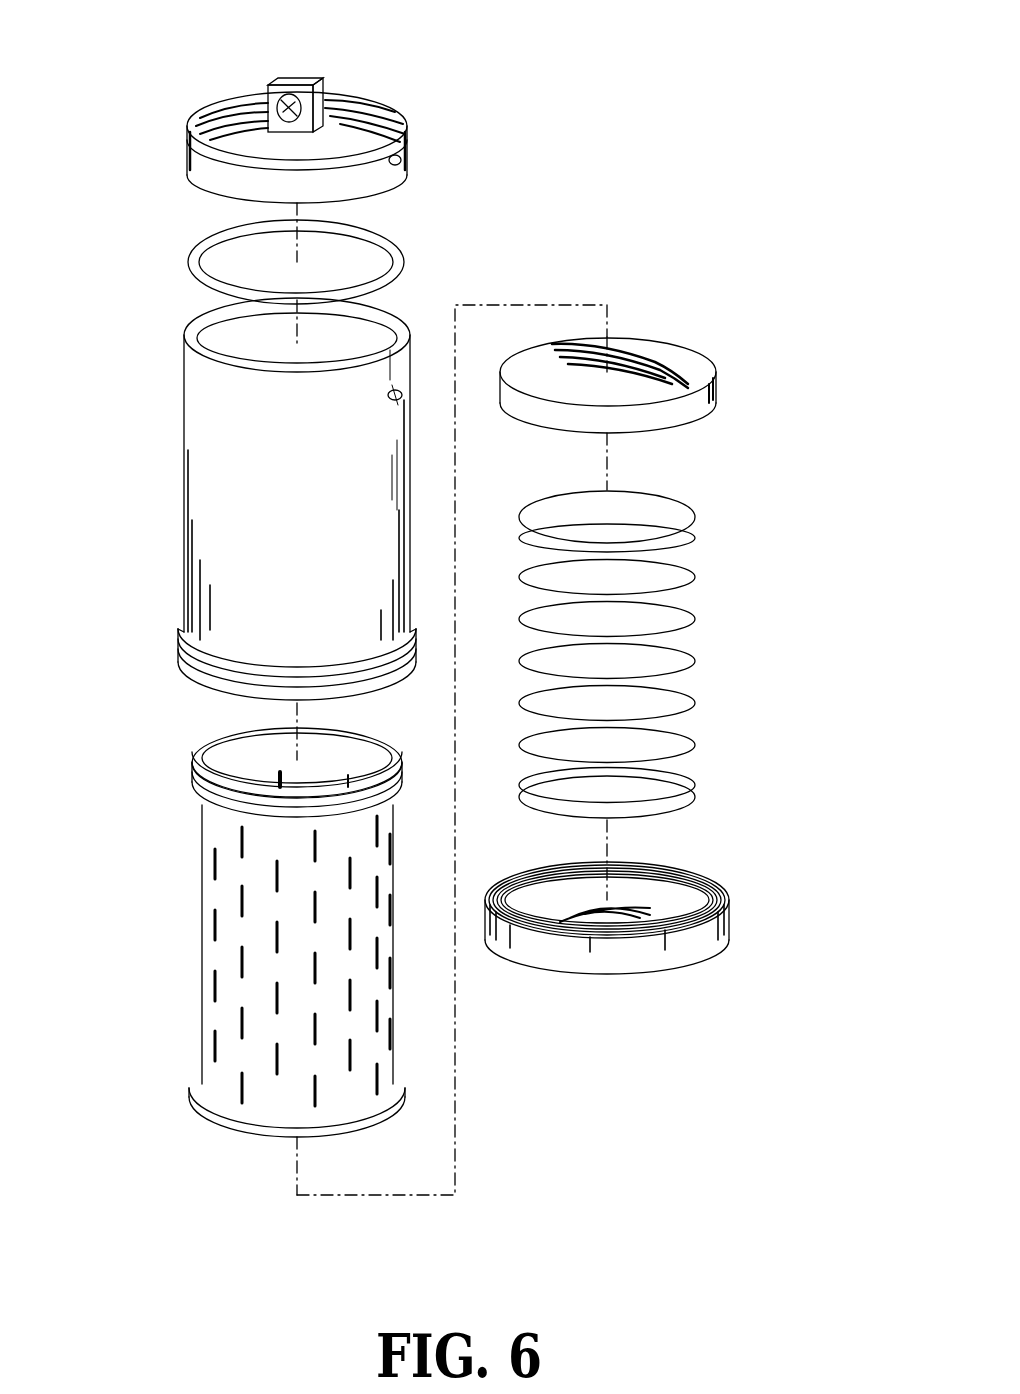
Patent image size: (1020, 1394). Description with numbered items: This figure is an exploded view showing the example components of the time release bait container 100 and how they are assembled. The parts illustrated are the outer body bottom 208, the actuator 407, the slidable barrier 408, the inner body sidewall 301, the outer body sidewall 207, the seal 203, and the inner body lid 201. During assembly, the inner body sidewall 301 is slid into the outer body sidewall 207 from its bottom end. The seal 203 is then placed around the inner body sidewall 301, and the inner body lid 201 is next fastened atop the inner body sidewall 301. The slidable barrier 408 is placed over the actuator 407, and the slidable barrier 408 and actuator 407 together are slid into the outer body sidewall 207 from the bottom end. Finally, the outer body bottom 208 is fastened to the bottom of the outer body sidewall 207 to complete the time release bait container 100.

The time release bait container 100 is at (514, 76).
The inner body lid 201 is at (250, 107).
The seal 203 is at (190, 262).
The outer body sidewall 207 is at (205, 438).
The inner body sidewall 301 is at (207, 921).
The slidable barrier 408 is at (577, 417).
The actuator 407 is at (680, 626).
The outer body bottom 208 is at (614, 960).